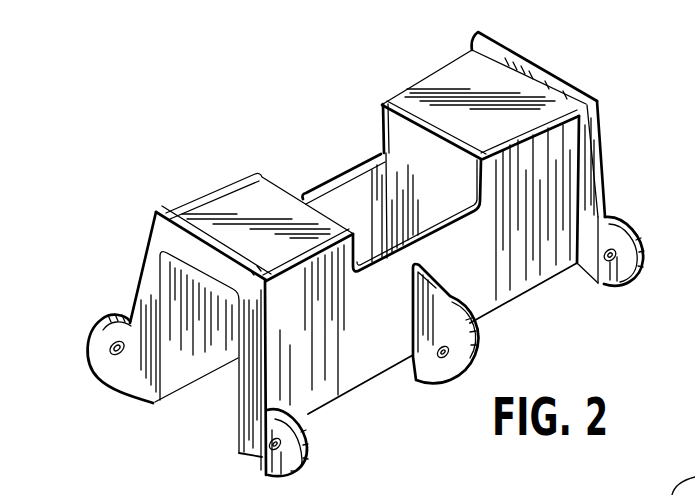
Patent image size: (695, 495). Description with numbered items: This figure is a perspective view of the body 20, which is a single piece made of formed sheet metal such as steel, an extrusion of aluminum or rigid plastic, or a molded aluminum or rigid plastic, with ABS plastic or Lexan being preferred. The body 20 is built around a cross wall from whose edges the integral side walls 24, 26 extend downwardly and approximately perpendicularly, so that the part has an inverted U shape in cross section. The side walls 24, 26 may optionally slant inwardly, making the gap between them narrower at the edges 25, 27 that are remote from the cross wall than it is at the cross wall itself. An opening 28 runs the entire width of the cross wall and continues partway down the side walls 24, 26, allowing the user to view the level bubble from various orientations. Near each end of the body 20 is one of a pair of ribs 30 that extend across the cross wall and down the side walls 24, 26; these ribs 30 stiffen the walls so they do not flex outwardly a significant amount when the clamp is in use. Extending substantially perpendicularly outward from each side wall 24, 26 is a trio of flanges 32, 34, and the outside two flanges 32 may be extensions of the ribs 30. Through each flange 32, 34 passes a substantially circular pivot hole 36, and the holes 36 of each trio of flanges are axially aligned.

The body 20 is at (640, 125).
The side wall 24 is at (176, 373).
The edge of side wall 25 is at (213, 377).
The side wall 26 is at (518, 274).
The edge of side wall 27 is at (360, 387).
The opening 28 is at (330, 179).
The rib 30 is at (157, 209).
The flange 32 is at (98, 322).
The flange 34 is at (478, 357).
The pivot hole 36 is at (113, 352).